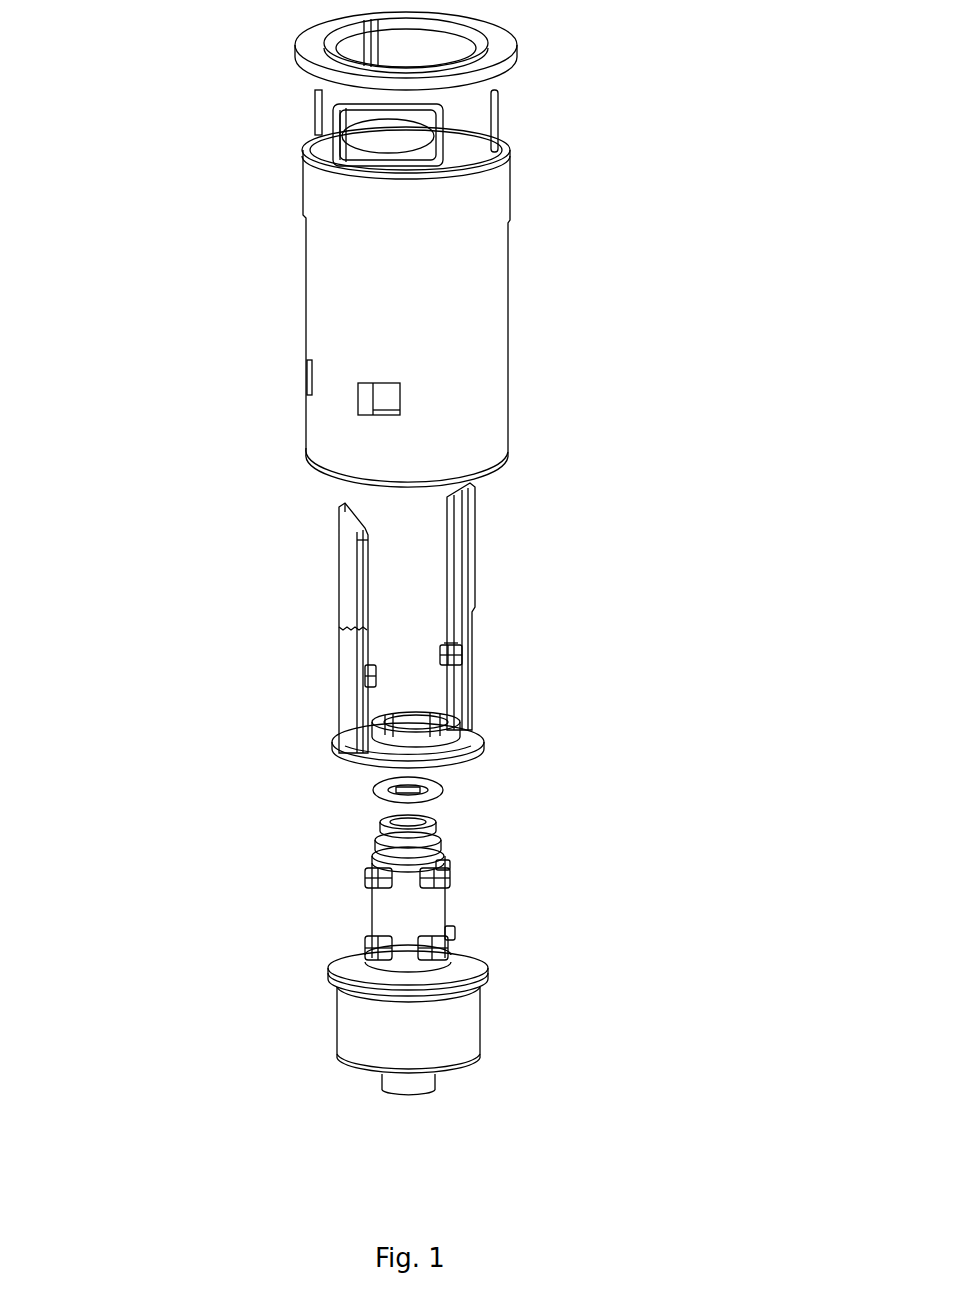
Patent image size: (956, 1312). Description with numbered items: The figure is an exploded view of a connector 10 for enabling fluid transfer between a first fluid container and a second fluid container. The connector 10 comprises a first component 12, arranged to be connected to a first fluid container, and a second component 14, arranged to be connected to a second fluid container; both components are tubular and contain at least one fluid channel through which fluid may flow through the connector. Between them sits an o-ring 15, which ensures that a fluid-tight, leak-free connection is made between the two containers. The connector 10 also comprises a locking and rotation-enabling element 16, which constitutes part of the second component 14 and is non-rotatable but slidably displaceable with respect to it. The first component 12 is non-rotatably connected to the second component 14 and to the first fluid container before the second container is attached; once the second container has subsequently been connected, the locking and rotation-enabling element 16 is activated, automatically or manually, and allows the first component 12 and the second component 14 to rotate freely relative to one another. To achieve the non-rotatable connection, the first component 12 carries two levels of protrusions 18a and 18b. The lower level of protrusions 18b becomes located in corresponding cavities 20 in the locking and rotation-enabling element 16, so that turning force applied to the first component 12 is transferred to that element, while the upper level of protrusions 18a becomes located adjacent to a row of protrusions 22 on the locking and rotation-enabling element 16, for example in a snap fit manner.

The connector 10 is at (730, 400).
The first component 12 is at (182, 910).
The second component 14 is at (200, 148).
The o-ring 15 is at (365, 783).
The locking and rotation-enabling element 16 is at (272, 620).
The upper level of protrusions 18a is at (365, 872).
The lower level of protrusions 18b is at (365, 942).
The cavities 20 is at (445, 726).
The row of protrusions 22 is at (458, 652).